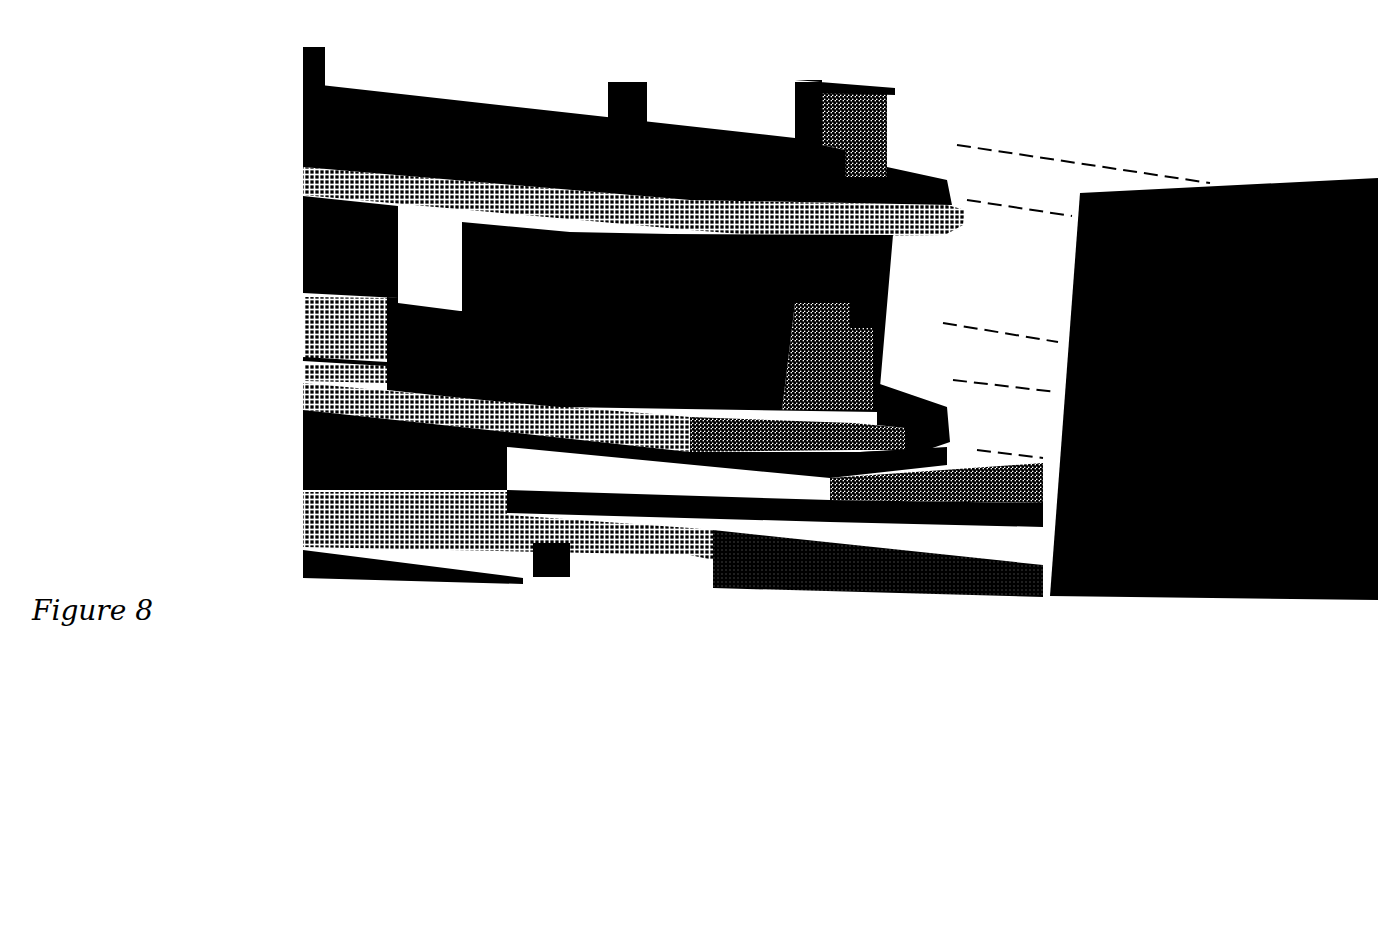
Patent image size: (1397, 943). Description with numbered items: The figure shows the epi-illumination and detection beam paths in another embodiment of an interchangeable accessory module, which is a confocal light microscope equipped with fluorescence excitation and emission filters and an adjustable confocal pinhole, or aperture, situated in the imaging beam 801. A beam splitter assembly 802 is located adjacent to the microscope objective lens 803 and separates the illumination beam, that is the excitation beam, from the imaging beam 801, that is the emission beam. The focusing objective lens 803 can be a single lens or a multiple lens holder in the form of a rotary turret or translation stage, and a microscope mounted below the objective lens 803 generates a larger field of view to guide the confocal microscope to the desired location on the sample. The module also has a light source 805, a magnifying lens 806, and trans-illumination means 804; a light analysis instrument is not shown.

The imaging beam 801 is at (592, 228).
The beam splitter assembly 802 is at (510, 298).
The microscope objective lens 803 is at (387, 353).
The trans-illumination means 804 is at (512, 529).
The light source 805 is at (900, 138).
The magnifying lens 806 is at (890, 272).